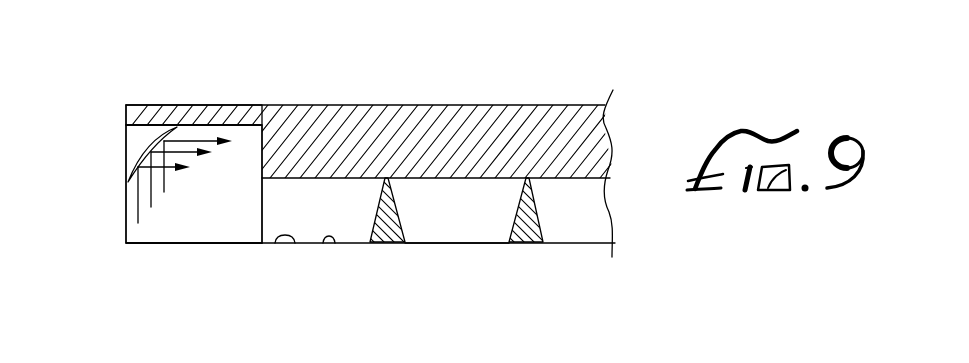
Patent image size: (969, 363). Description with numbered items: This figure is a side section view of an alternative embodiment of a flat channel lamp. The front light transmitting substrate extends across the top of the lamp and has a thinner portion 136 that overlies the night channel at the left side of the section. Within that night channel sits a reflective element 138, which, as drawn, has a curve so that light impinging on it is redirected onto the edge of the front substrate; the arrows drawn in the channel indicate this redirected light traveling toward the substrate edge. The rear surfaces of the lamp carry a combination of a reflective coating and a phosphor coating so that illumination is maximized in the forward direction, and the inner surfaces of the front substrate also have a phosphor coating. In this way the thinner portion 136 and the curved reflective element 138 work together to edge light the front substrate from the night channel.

The thinner portion 136 is at (178, 104).
The reflective element 138 is at (148, 147).